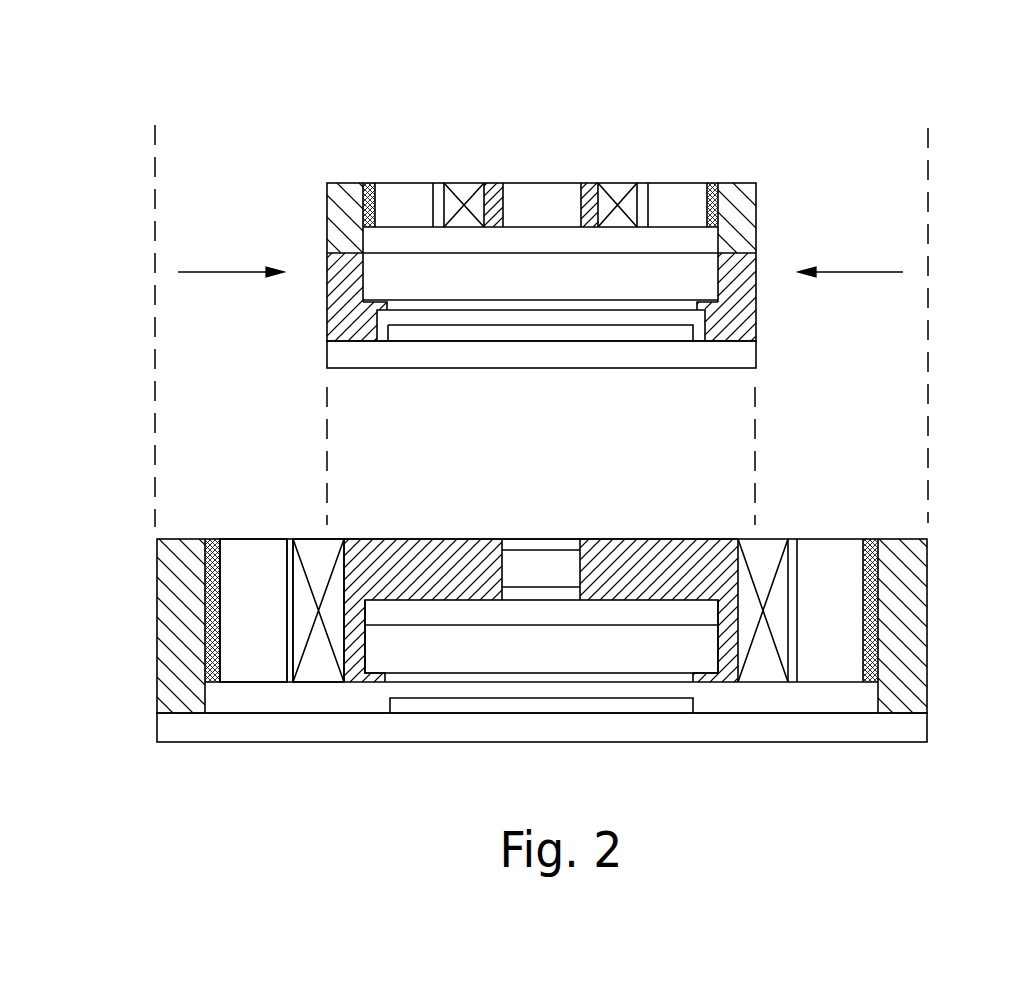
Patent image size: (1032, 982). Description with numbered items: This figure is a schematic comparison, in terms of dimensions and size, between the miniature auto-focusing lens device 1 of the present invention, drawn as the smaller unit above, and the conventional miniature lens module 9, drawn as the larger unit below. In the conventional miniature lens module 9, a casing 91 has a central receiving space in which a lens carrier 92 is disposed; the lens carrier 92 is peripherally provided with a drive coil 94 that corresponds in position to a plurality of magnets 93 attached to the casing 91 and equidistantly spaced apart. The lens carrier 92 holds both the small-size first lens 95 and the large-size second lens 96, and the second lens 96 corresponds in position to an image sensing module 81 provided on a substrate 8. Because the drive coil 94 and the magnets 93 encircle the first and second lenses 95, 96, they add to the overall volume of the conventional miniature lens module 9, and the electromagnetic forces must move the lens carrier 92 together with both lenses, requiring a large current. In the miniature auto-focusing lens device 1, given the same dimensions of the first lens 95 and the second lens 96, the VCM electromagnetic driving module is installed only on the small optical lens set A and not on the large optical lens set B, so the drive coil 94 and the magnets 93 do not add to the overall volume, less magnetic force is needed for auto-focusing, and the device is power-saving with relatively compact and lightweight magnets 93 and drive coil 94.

The miniature auto-focusing lens device 1 is at (808, 150).
The conventional miniature lens module 9 is at (945, 466).
The casing 91 is at (173, 562).
The lens carrier 92 is at (452, 548).
The magnets 93 is at (255, 552).
The drive coil 94 is at (315, 550).
The first lens 95 is at (543, 548).
The second lens 96 is at (640, 642).
The substrate 8 is at (375, 733).
The image sensing module 81 is at (519, 707).